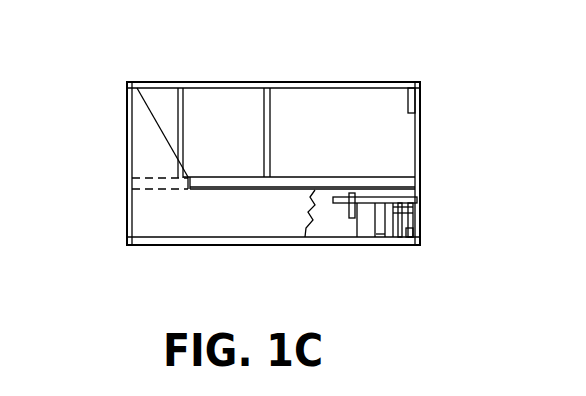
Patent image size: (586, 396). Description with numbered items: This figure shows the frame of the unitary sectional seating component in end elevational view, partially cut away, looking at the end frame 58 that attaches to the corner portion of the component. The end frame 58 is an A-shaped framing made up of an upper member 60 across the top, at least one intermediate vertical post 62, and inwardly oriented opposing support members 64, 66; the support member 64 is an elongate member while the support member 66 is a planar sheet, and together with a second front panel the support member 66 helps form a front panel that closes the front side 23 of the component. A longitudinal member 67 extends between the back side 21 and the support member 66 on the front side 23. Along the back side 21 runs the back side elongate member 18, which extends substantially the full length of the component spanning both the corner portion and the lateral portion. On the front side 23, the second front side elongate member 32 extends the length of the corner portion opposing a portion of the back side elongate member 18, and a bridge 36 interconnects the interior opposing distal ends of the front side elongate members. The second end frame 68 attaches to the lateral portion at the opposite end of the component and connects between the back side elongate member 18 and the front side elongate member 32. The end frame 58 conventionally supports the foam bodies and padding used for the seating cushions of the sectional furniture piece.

The end frame 58 is at (225, 50).
The upper member 60 is at (320, 82).
The back side 21 is at (115, 163).
The support member 66 is at (420, 118).
The back side elongate member 18 is at (126, 245).
The support member 64 is at (183, 134).
The intermediate vertical post 62 is at (270, 132).
The second end frame 68 is at (192, 227).
The longitudinal member 67 is at (315, 184).
The front side 23 is at (420, 213).
The bridge 36 is at (384, 237).
The second front side elongate member 32 is at (408, 237).